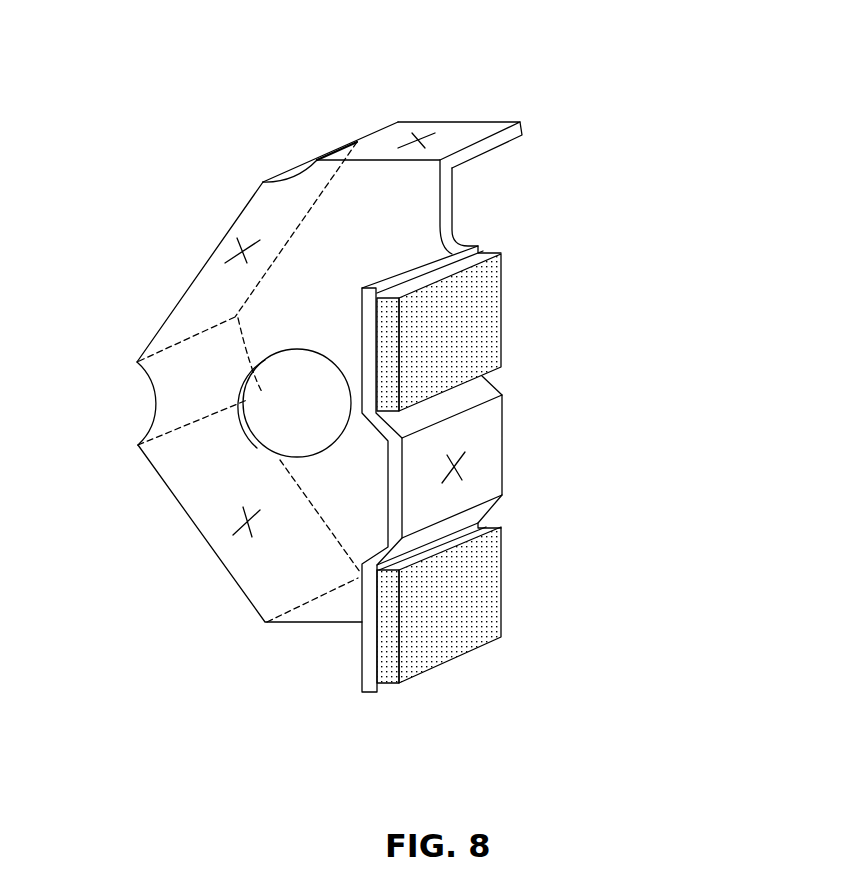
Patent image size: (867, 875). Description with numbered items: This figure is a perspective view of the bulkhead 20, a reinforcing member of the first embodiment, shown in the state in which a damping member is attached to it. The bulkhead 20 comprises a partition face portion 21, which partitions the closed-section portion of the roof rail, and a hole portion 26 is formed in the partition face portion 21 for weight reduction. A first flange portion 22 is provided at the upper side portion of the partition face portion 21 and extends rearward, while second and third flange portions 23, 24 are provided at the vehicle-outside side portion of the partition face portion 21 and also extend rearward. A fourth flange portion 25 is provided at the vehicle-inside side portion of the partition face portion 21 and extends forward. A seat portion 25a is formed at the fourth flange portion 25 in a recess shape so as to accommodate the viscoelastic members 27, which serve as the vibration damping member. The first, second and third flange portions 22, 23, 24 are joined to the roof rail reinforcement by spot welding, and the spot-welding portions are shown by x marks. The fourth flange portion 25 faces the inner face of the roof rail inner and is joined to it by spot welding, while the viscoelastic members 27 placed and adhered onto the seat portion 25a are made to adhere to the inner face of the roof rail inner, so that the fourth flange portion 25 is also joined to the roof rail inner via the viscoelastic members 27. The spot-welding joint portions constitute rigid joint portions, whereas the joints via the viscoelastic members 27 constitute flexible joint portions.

The bulkhead 20 is at (566, 81).
The partition face portion 21 is at (177, 373).
The first flange portion 22 is at (463, 133).
The second flange portion 23 is at (277, 212).
The third flange portion 24 is at (270, 582).
The fourth flange portion 25 is at (488, 457).
The seat portion 25a is at (494, 243).
The hole portion 26 is at (252, 447).
The viscoelastic members 27 is at (487, 322).